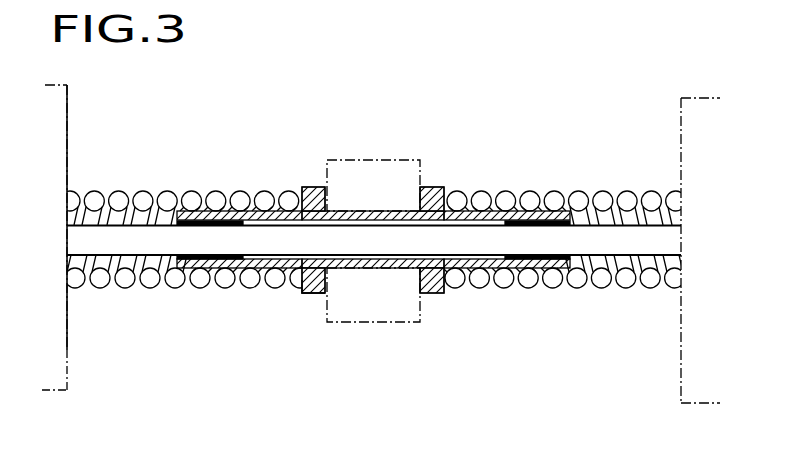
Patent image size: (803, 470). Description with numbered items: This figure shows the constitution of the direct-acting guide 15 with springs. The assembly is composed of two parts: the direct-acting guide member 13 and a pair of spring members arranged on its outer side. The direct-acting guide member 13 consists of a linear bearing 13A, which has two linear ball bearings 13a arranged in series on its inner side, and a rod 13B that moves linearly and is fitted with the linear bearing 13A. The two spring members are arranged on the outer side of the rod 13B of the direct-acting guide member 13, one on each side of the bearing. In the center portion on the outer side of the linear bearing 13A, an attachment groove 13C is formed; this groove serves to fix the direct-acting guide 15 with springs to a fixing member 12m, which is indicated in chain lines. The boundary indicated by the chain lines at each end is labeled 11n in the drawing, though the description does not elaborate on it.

The housing wall (chain line) 11n is at (37, 101).
The fixing member 12m is at (363, 175).
The direct-acting guide member 13 is at (430, 187).
The linear bearing 13A is at (300, 270).
The rod 13B is at (492, 260).
The attachment groove 13C is at (328, 294).
The linear ball bearing 13a is at (183, 262).
The direct-acting guide with springs 15 is at (592, 152).